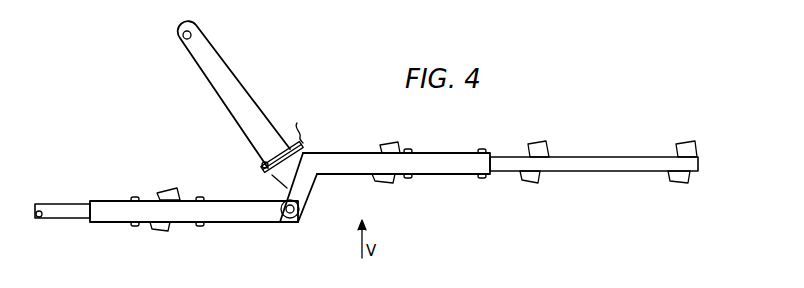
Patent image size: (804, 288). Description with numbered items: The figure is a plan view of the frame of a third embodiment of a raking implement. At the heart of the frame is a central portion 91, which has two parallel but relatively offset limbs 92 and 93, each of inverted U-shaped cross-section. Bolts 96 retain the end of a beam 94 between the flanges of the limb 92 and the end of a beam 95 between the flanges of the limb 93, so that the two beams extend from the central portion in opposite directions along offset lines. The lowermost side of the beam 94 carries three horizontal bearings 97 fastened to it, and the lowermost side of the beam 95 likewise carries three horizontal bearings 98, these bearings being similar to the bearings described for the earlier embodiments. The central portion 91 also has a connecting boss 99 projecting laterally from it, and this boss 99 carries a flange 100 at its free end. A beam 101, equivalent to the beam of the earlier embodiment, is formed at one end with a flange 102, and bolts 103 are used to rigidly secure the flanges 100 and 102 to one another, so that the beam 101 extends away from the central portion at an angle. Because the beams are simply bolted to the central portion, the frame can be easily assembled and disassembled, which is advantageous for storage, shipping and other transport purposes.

The central portion 91 is at (313, 185).
The limb 92 is at (453, 157).
The limb 93 is at (260, 213).
The beam 94 is at (620, 158).
The beam 95 is at (73, 205).
The bolts 96 is at (213, 228).
The horizontal bearings 97 is at (380, 183).
The horizontal bearings 98 is at (170, 193).
The connecting boss 99 is at (285, 182).
The flange 100 is at (263, 170).
The beam 101 is at (238, 103).
The flange 102 is at (305, 140).
The bolts 103 is at (307, 120).